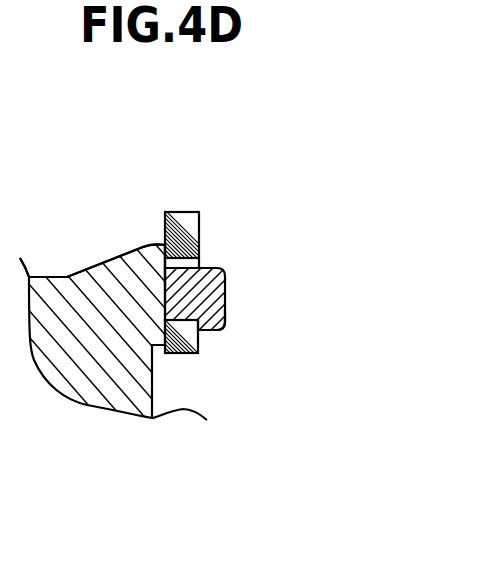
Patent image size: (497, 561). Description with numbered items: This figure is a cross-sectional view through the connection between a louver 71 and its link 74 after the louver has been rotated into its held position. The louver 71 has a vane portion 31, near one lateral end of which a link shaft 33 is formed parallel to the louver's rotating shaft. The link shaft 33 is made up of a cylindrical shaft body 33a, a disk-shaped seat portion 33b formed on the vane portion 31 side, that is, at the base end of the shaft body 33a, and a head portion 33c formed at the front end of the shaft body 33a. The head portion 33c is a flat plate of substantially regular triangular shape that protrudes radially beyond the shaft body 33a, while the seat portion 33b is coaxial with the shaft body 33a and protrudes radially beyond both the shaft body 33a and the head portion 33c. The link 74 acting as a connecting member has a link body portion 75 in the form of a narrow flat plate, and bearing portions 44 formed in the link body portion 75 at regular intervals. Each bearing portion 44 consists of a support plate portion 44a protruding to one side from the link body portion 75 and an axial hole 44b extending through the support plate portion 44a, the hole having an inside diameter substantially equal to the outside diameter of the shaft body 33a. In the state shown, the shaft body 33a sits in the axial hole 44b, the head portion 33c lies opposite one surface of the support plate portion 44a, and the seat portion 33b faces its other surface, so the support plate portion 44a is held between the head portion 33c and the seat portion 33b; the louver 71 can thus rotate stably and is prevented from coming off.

The vane portion 31 is at (143, 389).
The louver 71 is at (50, 288).
The seat portion 33b is at (155, 270).
The bearing portion 44 is at (219, 235).
The link 74 is at (199, 212).
The link body portion 75 is at (200, 223).
The support plate portion 44a is at (199, 262).
The axial hole 44b is at (200, 268).
The link shaft 33 is at (228, 306).
The head portion 33c is at (221, 324).
The shaft body 33a is at (199, 354).